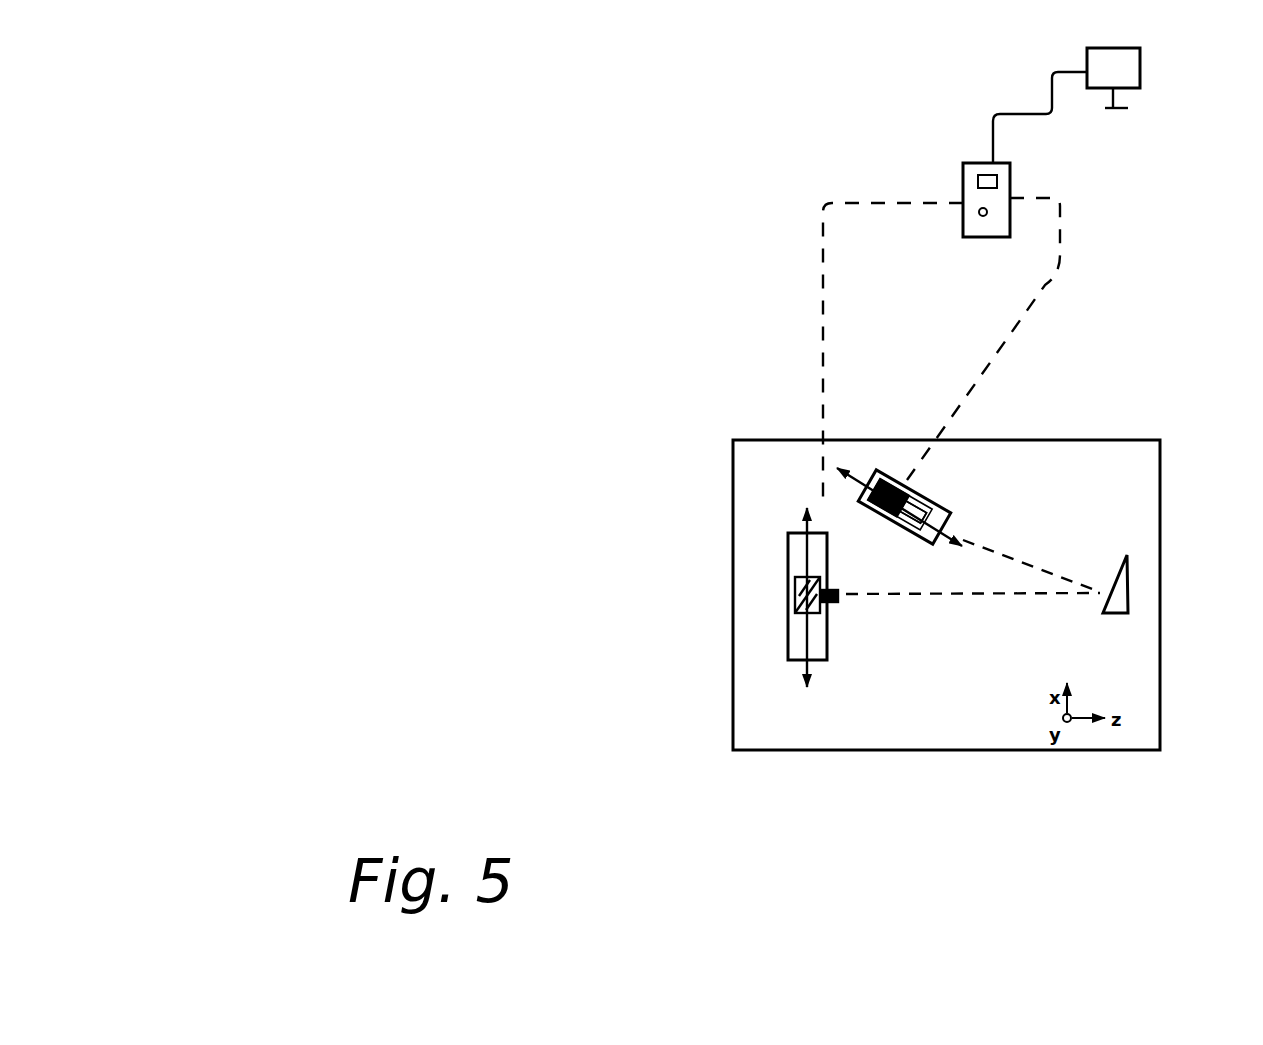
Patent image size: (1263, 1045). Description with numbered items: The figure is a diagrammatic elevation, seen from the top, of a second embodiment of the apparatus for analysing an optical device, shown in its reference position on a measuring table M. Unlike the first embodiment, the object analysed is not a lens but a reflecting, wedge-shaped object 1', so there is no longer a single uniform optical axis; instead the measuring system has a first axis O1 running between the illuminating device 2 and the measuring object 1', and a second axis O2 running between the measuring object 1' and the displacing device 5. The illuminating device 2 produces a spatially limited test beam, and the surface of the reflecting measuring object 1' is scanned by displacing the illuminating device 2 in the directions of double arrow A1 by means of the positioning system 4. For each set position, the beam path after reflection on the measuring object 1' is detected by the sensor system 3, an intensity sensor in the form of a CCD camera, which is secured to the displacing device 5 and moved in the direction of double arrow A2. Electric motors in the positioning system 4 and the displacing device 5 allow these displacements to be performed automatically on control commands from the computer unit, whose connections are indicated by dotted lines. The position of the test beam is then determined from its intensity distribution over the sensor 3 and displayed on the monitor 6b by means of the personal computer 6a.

The monitor 6b is at (1148, 62).
The personal computer 6a is at (941, 331).
The displacing device 5 is at (950, 505).
The sensor system 3 is at (913, 485).
The illuminating device 2 is at (837, 578).
The positioning system 4 is at (800, 607).
The reflecting, wedge-shaped object 1' is at (1121, 531).
The measuring table M is at (1133, 438).
The double arrow A1 is at (803, 557).
The double arrow A2 is at (845, 457).
The first axis O1 is at (983, 597).
The second axis O2 is at (1003, 552).